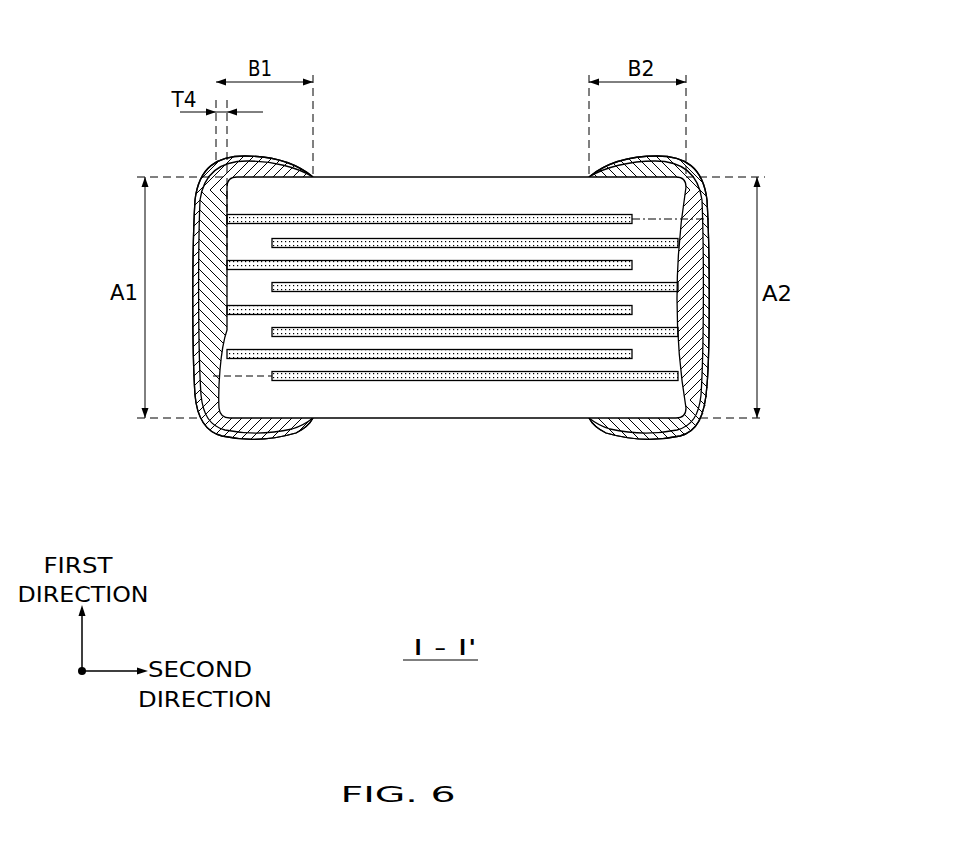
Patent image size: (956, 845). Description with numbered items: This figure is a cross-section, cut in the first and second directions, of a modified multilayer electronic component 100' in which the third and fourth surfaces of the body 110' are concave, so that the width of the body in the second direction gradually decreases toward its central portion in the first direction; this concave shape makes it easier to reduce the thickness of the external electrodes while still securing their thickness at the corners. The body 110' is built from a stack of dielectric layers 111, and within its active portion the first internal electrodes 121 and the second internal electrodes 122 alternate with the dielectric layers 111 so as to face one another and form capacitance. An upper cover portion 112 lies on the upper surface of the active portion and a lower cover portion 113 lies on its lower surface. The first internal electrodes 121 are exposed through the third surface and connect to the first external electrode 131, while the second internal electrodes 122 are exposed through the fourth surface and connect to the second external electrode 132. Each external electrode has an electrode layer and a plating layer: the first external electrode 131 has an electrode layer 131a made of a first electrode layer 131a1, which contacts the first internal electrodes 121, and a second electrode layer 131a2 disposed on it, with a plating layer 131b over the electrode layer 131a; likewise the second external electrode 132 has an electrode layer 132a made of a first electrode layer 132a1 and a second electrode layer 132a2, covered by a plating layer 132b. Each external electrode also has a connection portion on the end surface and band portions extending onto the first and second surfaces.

The multilayer electronic component 100' is at (155, 24).
The body 110' is at (452, 264).
The dielectric layer 111 is at (370, 255).
The upper cover portion 112 is at (457, 192).
The lower cover portion 113 is at (447, 409).
The first internal electrode 121 is at (512, 216).
The second internal electrode 122 is at (557, 240).
The first external electrode 131 is at (180, 549).
The first electrode layer 131a is at (250, 502).
The first electrode layer of first external electrode 131a1 is at (283, 434).
The second electrode layer of first external electrode 131a2 is at (222, 431).
The first plating layer 131b is at (205, 430).
The second external electrode 132 is at (607, 549).
The second electrode layer 132a is at (652, 502).
The first electrode layer of second external electrode 132a1 is at (617, 434).
The second electrode layer of second external electrode 132a2 is at (678, 432).
The second plating layer 132b is at (696, 430).